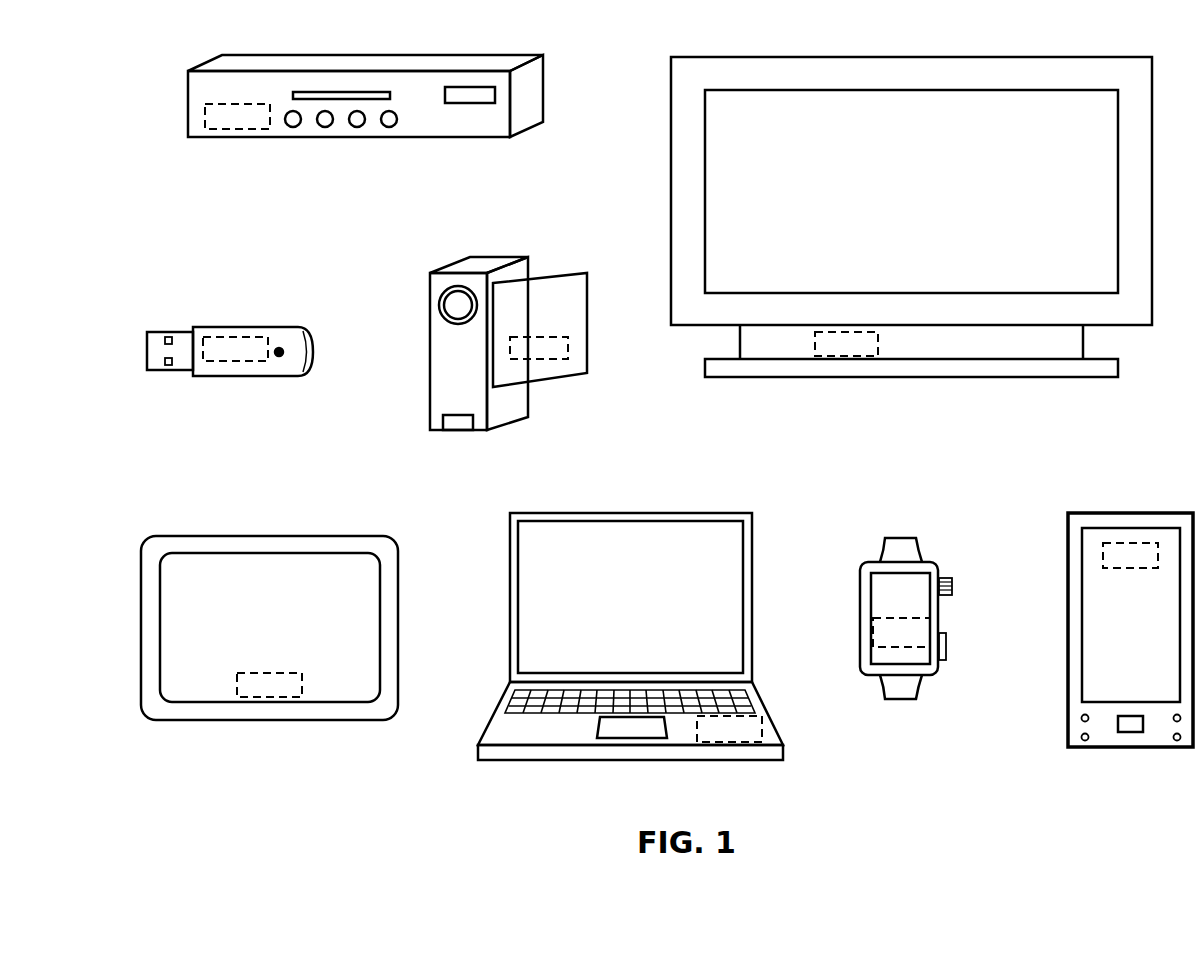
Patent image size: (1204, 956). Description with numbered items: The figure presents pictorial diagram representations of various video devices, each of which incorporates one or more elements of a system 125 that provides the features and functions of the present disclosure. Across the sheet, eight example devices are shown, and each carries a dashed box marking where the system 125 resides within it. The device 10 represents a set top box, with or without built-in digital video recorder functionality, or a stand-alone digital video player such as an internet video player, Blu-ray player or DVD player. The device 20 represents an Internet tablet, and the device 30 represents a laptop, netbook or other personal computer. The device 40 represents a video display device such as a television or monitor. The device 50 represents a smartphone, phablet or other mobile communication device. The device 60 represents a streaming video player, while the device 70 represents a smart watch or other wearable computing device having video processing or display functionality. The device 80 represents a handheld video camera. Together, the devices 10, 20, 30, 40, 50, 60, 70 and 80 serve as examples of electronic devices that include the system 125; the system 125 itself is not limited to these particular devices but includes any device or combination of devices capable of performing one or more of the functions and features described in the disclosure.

The set top box 10 is at (224, 95).
The Internet tablet 20 is at (201, 588).
The laptop 30 is at (521, 741).
The video display device 40 is at (747, 122).
The smartphone 50 is at (1116, 698).
The streaming video player 60 is at (254, 304).
The smart watch 70 is at (862, 546).
The handheld video camera 80 is at (473, 390).
The system 125 is at (680, 423).